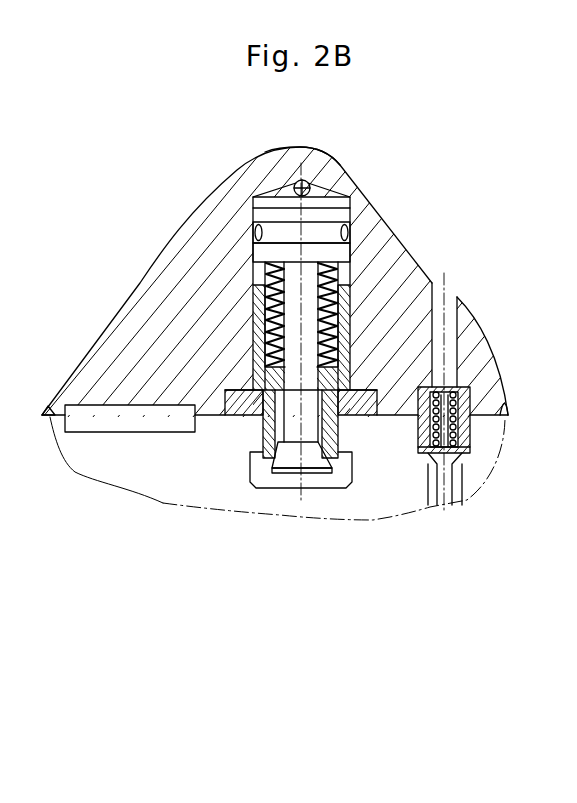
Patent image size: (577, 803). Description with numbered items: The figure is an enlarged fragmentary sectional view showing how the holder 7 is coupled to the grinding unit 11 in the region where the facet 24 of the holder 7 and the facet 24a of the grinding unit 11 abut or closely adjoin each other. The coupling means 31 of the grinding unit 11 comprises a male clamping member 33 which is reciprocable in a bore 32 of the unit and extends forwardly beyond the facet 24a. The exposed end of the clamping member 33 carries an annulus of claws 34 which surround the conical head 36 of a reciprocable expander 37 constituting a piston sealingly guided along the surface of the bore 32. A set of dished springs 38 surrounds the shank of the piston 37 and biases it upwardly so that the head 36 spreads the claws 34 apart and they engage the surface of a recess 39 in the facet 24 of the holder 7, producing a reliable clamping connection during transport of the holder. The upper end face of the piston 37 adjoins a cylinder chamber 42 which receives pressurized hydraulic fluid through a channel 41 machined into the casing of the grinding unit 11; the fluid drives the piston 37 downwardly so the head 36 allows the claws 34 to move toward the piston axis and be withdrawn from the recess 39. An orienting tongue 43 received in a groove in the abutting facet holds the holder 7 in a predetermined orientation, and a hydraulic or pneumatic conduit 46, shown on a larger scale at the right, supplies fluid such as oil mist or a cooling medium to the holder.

The holder 7 is at (108, 470).
The grinding unit 11 is at (160, 290).
The facet 24 is at (47, 408).
The facet 24a is at (490, 424).
The coupling means 31 is at (236, 226).
The bore 32 is at (338, 273).
The male clamping member 33 is at (348, 295).
The claws 34 is at (252, 457).
The conical head 36 is at (320, 460).
The expander 37 is at (268, 343).
The dished springs 38 is at (270, 275).
The recess 39 is at (281, 482).
The channel 41 is at (345, 163).
The cylinder chamber 42 is at (355, 180).
The orienting tongue 43 is at (82, 423).
The conduit 46 is at (473, 393).